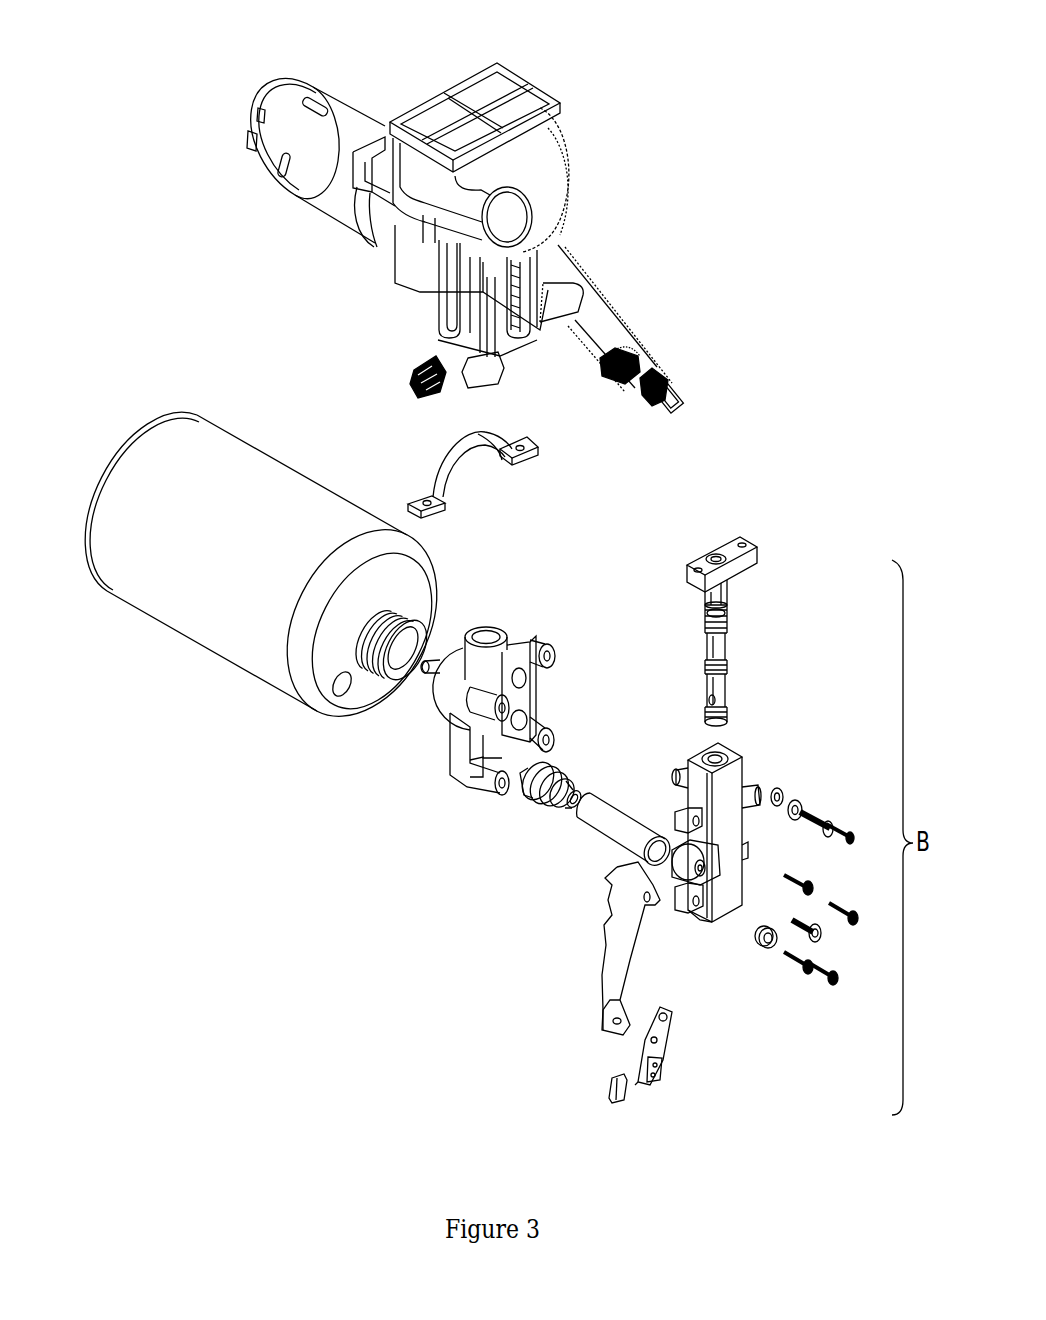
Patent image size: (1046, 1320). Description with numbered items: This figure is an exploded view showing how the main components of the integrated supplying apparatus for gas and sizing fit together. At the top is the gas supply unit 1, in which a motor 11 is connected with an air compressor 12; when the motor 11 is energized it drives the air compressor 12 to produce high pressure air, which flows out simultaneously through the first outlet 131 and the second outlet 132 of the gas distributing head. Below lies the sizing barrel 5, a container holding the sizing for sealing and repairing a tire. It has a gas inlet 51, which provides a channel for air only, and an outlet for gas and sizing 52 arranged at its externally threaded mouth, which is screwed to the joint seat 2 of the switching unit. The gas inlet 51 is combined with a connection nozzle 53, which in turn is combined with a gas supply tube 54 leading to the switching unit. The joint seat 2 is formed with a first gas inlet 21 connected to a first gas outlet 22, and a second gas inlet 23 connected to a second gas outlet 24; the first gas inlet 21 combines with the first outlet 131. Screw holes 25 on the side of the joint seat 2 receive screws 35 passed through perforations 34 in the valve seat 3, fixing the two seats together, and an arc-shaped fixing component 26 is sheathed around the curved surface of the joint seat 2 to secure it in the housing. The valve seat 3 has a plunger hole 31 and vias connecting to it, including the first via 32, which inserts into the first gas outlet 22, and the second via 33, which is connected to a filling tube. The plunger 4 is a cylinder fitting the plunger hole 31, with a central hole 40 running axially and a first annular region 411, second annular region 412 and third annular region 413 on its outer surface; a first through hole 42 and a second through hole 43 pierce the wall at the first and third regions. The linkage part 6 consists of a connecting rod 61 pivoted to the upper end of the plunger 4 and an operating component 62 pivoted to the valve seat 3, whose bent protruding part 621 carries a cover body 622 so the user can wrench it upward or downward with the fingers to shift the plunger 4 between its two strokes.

The gas supply unit 1 is at (622, 184).
The motor 11 is at (358, 124).
The air compressor 12 is at (477, 293).
The first outlet 131 is at (478, 374).
The second outlet 132 is at (410, 388).
The joint seat 2 is at (504, 691).
The first gas inlet 21 is at (490, 640).
The first gas outlet 22 is at (523, 680).
The second gas inlet 23 is at (521, 720).
The second gas outlet 24 is at (413, 680).
The screw holes 25 is at (500, 790).
The fixing component 26 is at (445, 468).
The valve seat 3 is at (764, 843).
The plunger hole 31 is at (710, 755).
The first via 32 is at (675, 774).
The second via 33 is at (761, 783).
The perforations 34 is at (714, 922).
The screws 35 is at (815, 811).
The plunger 4 is at (734, 615).
The central hole 40 is at (716, 559).
The first annular region 411 is at (725, 590).
The second annular region 412 is at (726, 642).
The third annular region 413 is at (726, 693).
The first through hole 42 is at (716, 617).
The second through hole 43 is at (710, 700).
The sizing barrel 5 is at (275, 562).
The gas inlet 51 is at (397, 650).
The outlet for gas and sizing 52 is at (337, 687).
The connection nozzle 53 is at (597, 818).
The gas supply tube 54 is at (527, 786).
The linkage part 6 is at (631, 982).
The connecting rod 61 is at (630, 940).
The operating component 62 is at (689, 1045).
The protruding part 621 is at (657, 1072).
The cover body 622 is at (588, 1081).